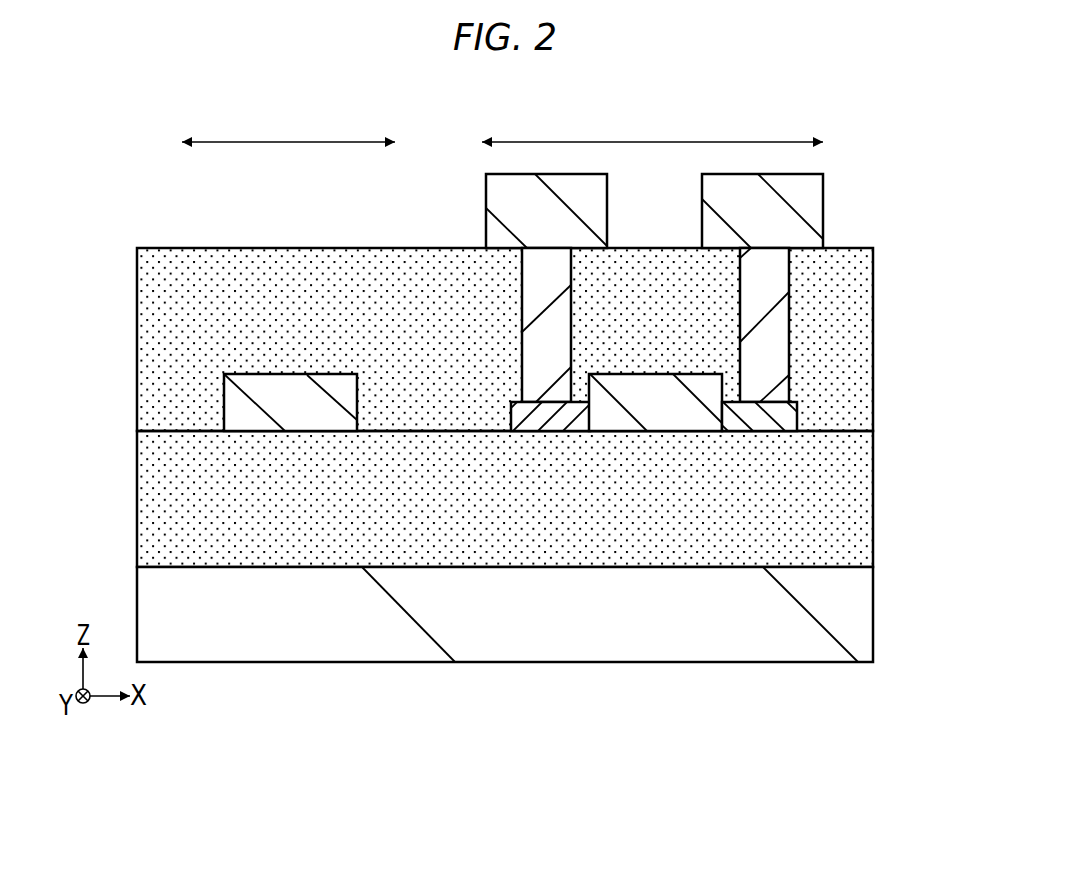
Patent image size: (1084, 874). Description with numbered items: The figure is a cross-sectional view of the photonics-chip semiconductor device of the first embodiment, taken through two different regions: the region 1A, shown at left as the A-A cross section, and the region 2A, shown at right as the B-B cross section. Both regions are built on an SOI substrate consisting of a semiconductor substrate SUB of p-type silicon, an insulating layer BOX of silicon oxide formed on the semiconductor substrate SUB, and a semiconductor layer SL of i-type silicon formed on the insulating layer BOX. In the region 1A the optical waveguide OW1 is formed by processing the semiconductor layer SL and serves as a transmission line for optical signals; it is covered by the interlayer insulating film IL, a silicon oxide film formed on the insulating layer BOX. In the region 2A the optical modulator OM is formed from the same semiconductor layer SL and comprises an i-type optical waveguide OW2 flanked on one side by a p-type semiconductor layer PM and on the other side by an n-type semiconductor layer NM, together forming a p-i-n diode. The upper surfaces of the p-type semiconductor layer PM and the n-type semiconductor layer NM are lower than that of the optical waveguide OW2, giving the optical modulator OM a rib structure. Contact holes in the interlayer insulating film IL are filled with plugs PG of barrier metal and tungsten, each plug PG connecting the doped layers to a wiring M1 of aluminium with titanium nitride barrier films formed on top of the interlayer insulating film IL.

The region 1A is at (292, 107).
The region 2A is at (652, 108).
The interlayer insulating film IL is at (853, 357).
The insulating layer BOX is at (852, 502).
The semiconductor substrate SUB is at (852, 620).
The wiring M1 is at (593, 209).
The plug PG is at (532, 312).
The semiconductor layer SL is at (520, 582).
The optical waveguide OW1 is at (298, 418).
The optical waveguide OW2 is at (670, 415).
The n-type semiconductor layer NM is at (540, 418).
The p-type semiconductor layer PM is at (765, 420).
The optical modulator OM is at (652, 582).